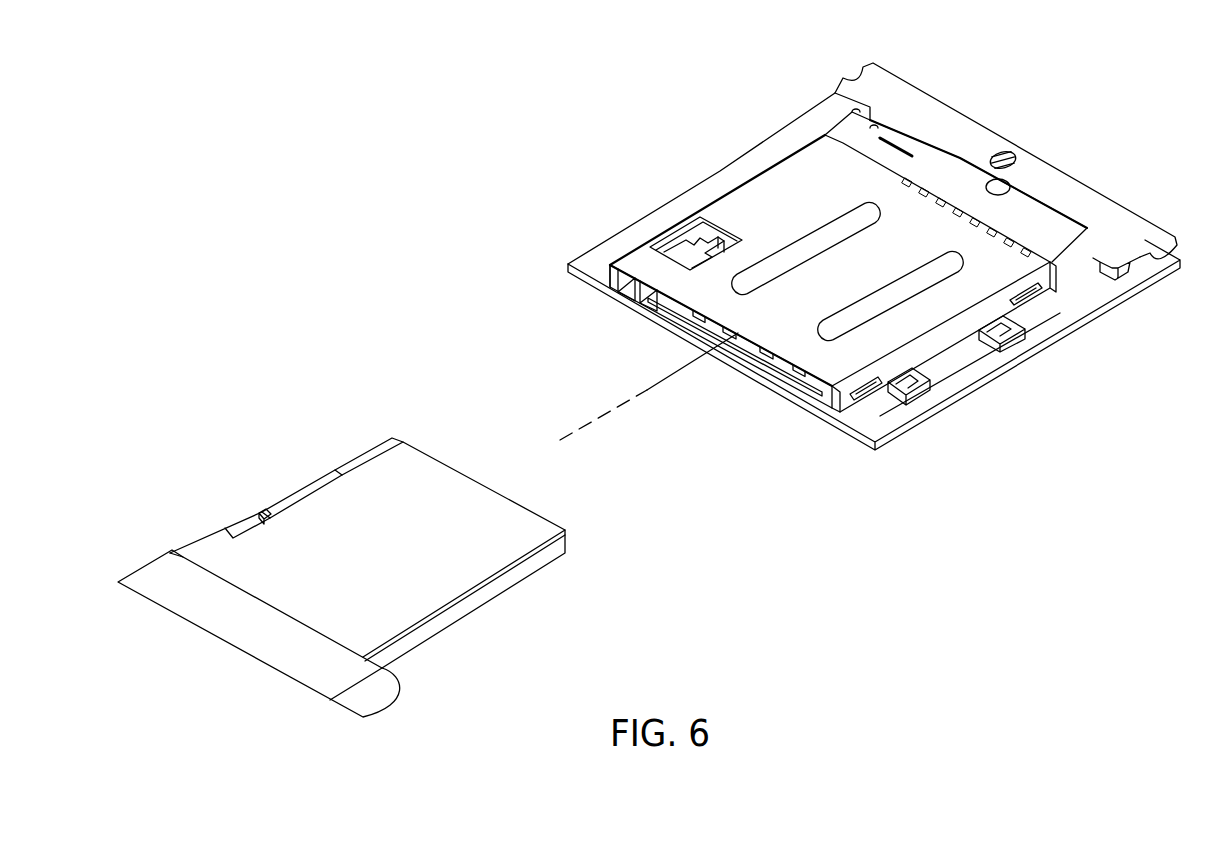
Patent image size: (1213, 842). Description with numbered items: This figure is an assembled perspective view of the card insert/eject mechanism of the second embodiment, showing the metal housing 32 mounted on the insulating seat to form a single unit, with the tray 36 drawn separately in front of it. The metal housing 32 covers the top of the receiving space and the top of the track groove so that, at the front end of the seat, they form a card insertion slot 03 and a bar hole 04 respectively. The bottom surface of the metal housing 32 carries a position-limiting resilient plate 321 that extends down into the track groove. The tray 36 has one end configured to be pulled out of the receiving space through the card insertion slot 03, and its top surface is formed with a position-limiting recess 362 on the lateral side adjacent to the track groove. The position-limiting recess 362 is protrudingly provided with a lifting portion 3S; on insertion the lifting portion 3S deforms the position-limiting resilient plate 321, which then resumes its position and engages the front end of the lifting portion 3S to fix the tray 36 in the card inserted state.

The metal housing 32 is at (908, 202).
The position-limiting resilient plate 321 is at (687, 257).
The bar hole 04 is at (625, 297).
The card insertion slot 03 is at (800, 403).
The tray 36 is at (492, 593).
The position-limiting recess 362 is at (362, 460).
The lifting portion 3S is at (303, 492).